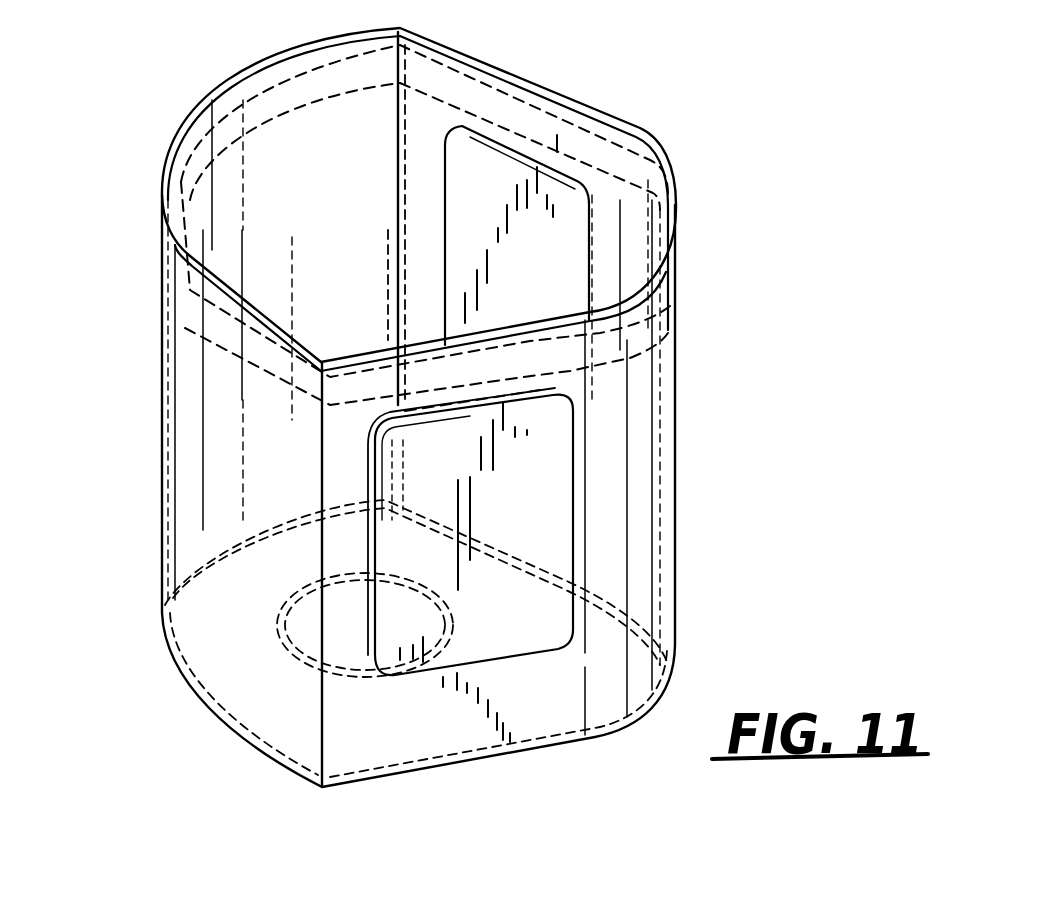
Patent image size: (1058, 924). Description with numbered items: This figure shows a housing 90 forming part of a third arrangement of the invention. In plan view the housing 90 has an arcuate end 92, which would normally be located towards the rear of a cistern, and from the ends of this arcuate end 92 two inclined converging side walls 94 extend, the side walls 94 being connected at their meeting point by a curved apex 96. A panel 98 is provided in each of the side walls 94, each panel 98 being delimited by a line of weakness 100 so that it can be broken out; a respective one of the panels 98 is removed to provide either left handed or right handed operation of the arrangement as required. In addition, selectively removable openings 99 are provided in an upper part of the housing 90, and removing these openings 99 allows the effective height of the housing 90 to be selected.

The housing 90 is at (603, 102).
The arcuate end 92 is at (240, 75).
The side walls 94 is at (500, 70).
The curved apex 96 is at (677, 222).
The panel 98 is at (558, 202).
The selectively removable openings 99 is at (160, 245).
The line of weakness 100 is at (555, 393).